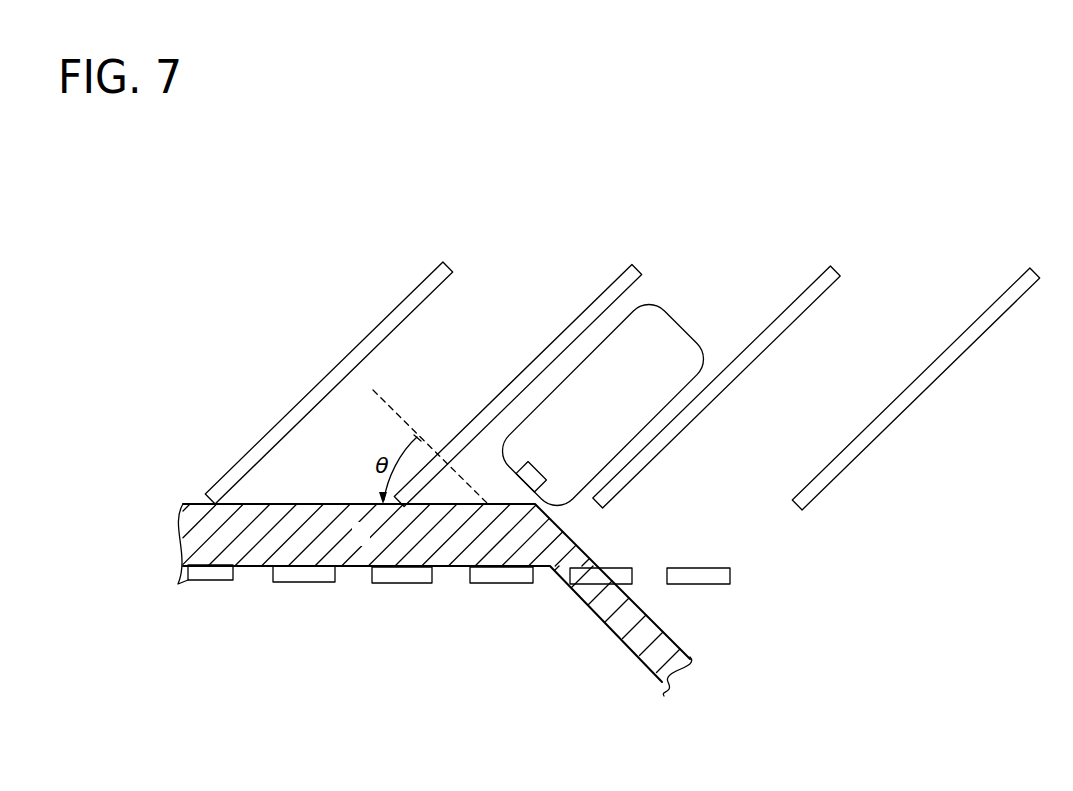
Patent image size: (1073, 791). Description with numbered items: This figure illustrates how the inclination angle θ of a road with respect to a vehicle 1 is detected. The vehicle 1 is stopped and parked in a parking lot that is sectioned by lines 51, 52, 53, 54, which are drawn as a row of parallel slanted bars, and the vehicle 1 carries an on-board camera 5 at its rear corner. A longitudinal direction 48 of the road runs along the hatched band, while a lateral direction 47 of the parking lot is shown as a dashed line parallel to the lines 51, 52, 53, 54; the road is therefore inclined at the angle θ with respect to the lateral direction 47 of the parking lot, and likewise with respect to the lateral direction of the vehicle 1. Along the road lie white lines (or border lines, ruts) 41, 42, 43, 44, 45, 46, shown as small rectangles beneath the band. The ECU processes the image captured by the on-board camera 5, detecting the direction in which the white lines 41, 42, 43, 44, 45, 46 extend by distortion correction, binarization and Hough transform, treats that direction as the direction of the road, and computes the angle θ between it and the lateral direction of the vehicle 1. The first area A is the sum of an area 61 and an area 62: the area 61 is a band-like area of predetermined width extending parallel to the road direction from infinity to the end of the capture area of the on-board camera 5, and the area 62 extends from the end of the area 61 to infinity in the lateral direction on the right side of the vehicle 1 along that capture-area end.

The vehicle 1 is at (678, 317).
The on-board camera 5 is at (544, 471).
The white line 41 is at (208, 581).
The white line 42 is at (307, 583).
The white line 43 is at (408, 584).
The white line 44 is at (507, 584).
The white line 45 is at (632, 570).
The white line 46 is at (703, 585).
The lateral direction of parking lot 47 is at (373, 390).
The longitudinal direction of road 48 is at (318, 504).
The line 51 is at (446, 282).
The line 52 is at (598, 293).
The line 53 is at (793, 300).
The line 54 is at (993, 300).
The area 61 is at (357, 567).
The area 62 is at (638, 663).